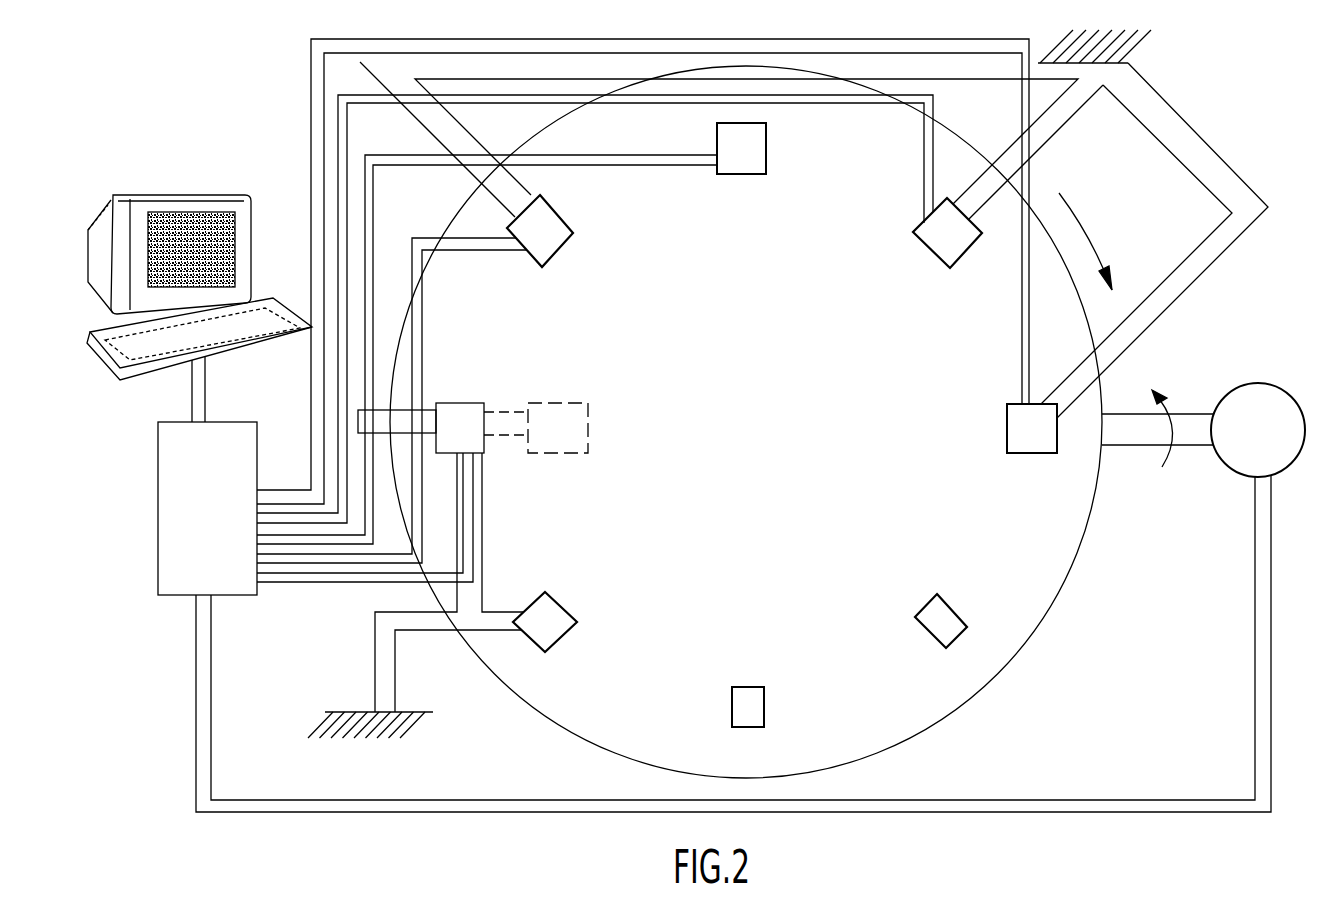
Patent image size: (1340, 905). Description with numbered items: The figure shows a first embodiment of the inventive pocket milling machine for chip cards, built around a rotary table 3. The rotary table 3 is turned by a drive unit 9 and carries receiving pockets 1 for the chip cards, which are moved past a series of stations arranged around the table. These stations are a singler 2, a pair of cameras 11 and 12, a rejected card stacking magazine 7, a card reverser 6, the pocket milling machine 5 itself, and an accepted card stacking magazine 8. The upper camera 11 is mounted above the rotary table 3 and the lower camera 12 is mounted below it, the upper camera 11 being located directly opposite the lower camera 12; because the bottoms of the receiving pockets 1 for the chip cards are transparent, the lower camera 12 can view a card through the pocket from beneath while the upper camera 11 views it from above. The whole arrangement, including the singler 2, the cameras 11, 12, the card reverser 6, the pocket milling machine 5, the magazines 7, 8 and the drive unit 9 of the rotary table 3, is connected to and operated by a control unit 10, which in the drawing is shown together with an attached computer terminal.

The receiving pockets for chip cards 1 is at (935, 622).
The singler 2 is at (550, 620).
The rotary table 3 is at (863, 516).
The pocket milling machine 5 is at (932, 236).
The card reverser 6 is at (744, 157).
The rejected card stacking magazine 7 is at (550, 232).
The accepted card stacking magazine 8 is at (1023, 442).
The drive unit 9 is at (1277, 453).
The control unit 10 is at (183, 513).
The upper camera 11 is at (466, 428).
The lower camera 12 is at (572, 432).